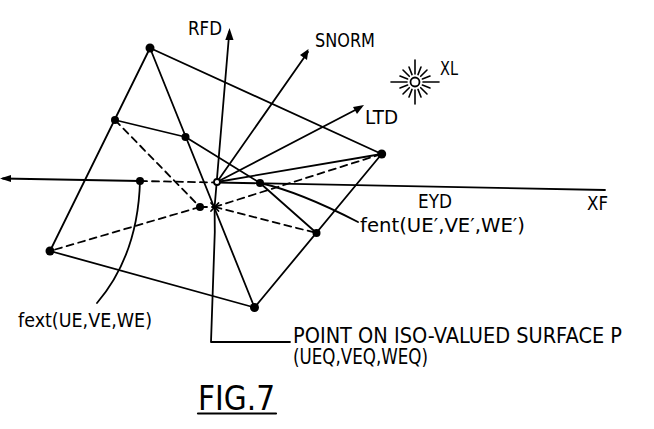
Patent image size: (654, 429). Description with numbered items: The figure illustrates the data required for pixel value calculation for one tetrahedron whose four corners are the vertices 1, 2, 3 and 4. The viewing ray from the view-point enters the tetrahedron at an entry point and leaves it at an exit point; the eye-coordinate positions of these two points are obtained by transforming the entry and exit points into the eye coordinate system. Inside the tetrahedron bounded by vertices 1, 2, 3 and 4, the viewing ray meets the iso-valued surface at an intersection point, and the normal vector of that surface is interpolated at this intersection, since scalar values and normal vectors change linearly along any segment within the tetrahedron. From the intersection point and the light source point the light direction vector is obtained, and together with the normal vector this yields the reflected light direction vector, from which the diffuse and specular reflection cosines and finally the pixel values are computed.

The tetrahedron vertex 1 is at (147, 38).
The tetrahedron vertex 2 is at (255, 320).
The tetrahedron vertex 3 is at (390, 155).
The tetrahedron vertex 4 is at (41, 250).